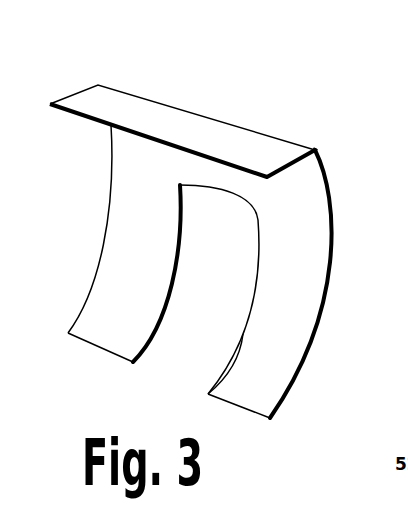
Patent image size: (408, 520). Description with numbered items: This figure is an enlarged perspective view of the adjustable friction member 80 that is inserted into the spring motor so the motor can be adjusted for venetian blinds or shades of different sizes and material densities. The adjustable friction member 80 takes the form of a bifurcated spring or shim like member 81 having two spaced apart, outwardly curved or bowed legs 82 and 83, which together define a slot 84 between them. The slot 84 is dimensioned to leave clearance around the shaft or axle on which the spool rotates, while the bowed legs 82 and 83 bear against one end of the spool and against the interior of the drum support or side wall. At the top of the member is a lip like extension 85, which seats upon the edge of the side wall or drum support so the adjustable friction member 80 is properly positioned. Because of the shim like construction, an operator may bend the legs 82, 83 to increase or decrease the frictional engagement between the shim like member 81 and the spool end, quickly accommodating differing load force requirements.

The adjustable friction member 80 is at (212, 239).
The bifurcated spring or shim like member 81 is at (323, 160).
The bowed leg 82 is at (108, 268).
The bowed leg 83 is at (311, 240).
The slot 84 is at (243, 334).
The lip like extension 85 is at (86, 100).